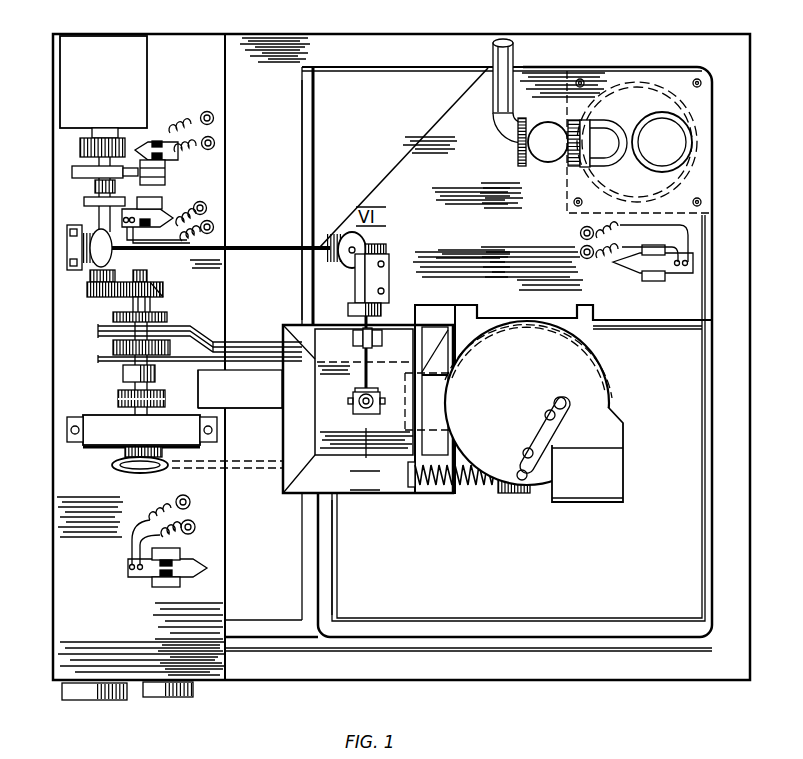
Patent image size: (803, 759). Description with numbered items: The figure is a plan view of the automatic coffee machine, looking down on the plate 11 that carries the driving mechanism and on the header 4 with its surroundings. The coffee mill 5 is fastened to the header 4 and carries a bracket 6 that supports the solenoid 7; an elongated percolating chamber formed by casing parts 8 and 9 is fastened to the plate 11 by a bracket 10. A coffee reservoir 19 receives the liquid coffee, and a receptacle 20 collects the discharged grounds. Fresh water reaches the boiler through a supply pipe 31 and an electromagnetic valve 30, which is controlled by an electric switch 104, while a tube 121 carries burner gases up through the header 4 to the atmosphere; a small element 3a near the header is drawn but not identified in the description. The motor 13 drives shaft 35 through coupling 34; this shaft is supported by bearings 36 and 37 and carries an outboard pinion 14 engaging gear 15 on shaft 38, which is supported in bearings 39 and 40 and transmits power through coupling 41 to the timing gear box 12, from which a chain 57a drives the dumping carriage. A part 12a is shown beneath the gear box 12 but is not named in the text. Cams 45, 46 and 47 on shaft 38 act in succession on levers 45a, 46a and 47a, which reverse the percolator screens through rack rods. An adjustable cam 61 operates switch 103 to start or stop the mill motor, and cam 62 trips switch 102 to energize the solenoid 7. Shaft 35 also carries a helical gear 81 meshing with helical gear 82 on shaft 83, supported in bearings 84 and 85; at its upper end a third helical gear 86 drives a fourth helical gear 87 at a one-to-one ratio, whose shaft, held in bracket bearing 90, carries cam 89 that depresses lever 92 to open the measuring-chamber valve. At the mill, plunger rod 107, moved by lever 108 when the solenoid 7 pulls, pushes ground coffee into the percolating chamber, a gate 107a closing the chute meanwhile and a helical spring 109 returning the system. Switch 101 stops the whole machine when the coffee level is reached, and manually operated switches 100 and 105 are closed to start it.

The mounting plate 3a is at (565, 212).
The header 4 is at (442, 130).
The coffee mill 5 is at (595, 372).
The bracket 6 is at (560, 356).
The solenoid 7 is at (625, 481).
The casing part of percolating chamber 8 is at (395, 482).
The casing part of percolating chamber 9 is at (445, 338).
The bracket 10 is at (257, 410).
The plate 11 is at (214, 562).
The timing gear box 12 is at (170, 428).
The motor pulley 12a is at (92, 452).
The motor 13 is at (103, 82).
The outboard pinion 14 is at (87, 292).
The gear 15 is at (170, 290).
The coffee reservoir 19 is at (302, 122).
The receptacle 20 is at (333, 540).
The electromagnetic valve 30 is at (545, 158).
The supply pipe 31 is at (516, 60).
The coupling 34 is at (80, 148).
The shaft 35 is at (99, 216).
The bearing 36 is at (95, 187).
The bearing 37 is at (90, 277).
The shaft 38 is at (144, 281).
The bearing 39 is at (132, 304).
The bearing 40 is at (123, 375).
The coupling 41 is at (118, 400).
The cam 45 is at (98, 359).
The lever 45a is at (236, 376).
The cam 46 is at (113, 350).
The lever 46a is at (233, 352).
The cam 47 is at (212, 322).
The lever 47a is at (236, 336).
The chain 57a is at (282, 470).
The adjustable cam 61 is at (72, 172).
The cam 62 is at (84, 201).
The helical gear 81 is at (138, 271).
The helical gear 82 is at (88, 250).
The shaft 83 is at (240, 248).
The bearing 84 is at (68, 235).
The bearing 85 is at (328, 258).
The third helical gear 86 is at (340, 238).
The fourth helical gear 87 is at (386, 249).
The cam 89 is at (348, 311).
The bracket bearing 90 is at (389, 288).
The lever 92 is at (371, 384).
The manually operated switch 100 is at (63, 690).
The electric switch 101 is at (150, 572).
The switch 102 is at (164, 214).
The electric switch 103 is at (147, 142).
The electric switch 104 is at (628, 272).
The manually operated switch 105 is at (170, 698).
The plunger rod 107 is at (520, 410).
The gate 107a is at (544, 394).
The lever 108 is at (566, 408).
The helical spring 109 is at (478, 488).
The tube 121 is at (660, 112).